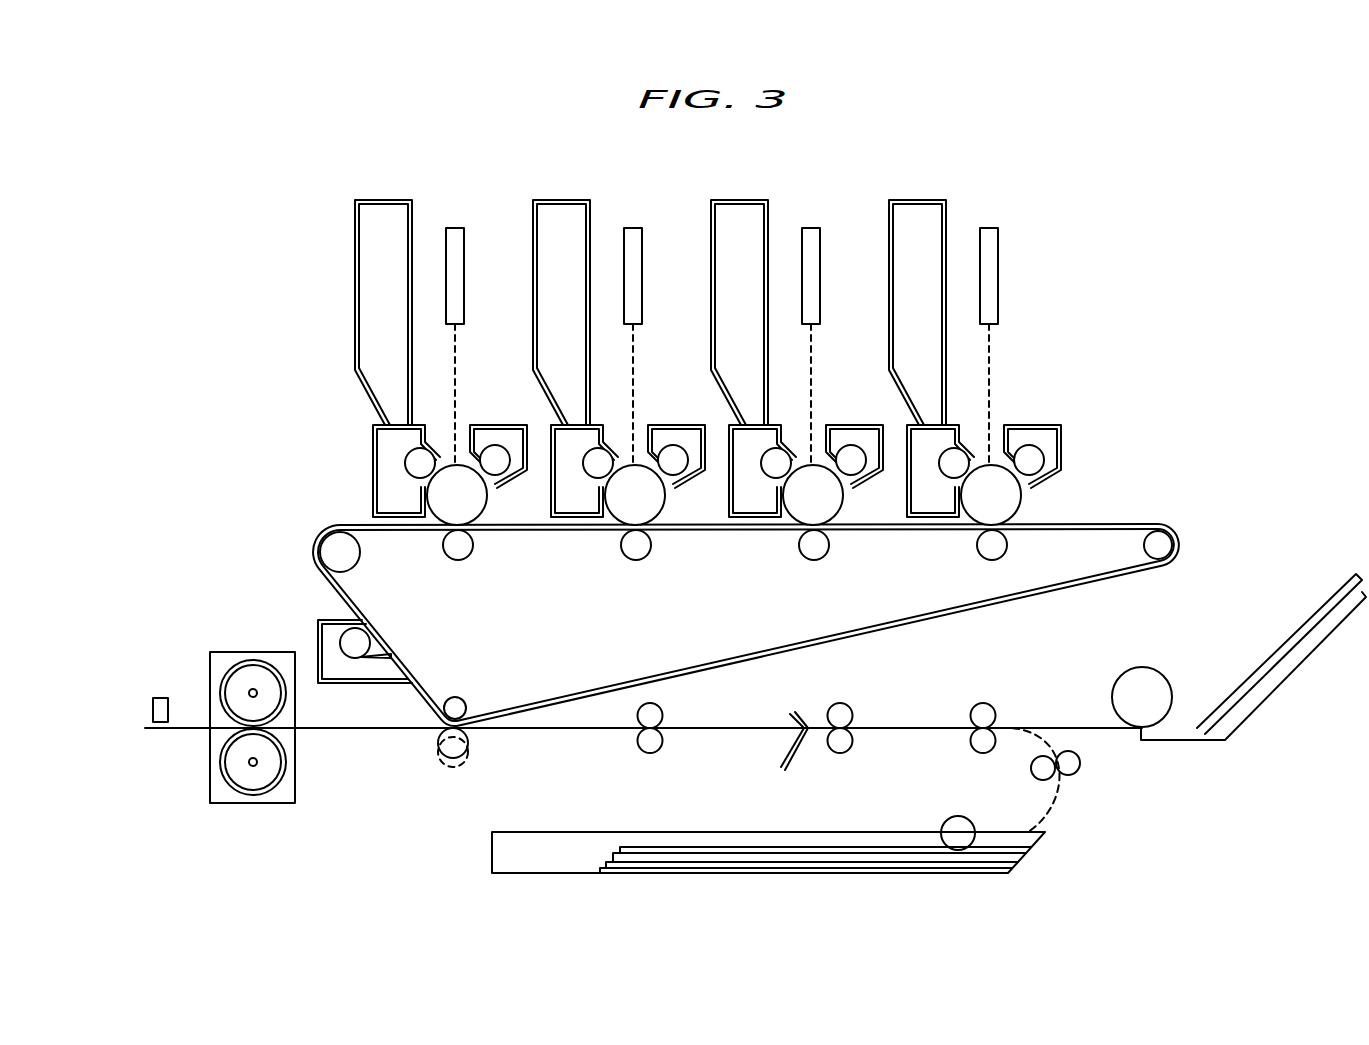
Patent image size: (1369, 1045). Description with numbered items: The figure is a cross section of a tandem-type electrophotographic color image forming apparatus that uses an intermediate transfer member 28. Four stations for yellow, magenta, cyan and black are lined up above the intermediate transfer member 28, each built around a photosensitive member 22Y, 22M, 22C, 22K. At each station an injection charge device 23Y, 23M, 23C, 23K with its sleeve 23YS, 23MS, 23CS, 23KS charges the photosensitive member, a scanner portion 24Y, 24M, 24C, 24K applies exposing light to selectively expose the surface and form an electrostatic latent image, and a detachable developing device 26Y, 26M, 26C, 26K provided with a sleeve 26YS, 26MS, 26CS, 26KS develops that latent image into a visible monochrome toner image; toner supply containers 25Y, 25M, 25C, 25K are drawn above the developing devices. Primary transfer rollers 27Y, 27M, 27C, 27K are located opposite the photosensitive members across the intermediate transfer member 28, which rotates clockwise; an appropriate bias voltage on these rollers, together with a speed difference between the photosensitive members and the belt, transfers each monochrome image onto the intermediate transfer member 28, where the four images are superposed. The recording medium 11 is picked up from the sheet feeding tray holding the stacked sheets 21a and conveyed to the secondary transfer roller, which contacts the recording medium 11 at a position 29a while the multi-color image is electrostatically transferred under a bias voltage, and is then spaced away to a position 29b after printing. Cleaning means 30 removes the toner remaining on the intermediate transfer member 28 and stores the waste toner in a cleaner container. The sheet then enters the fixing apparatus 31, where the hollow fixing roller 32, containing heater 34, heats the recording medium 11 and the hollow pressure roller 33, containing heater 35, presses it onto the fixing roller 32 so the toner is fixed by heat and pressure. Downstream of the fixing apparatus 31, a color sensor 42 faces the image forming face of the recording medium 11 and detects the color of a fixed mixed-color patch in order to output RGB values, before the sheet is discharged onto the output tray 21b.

The recording medium 11 is at (684, 832).
The recording sheets 21a is at (849, 847).
The sheet discharge tray 21b is at (1283, 640).
The photosensitive member 22Y is at (463, 468).
The photosensitive member 22M is at (644, 437).
The photosensitive member 22C is at (821, 437).
The photosensitive member 22K is at (999, 437).
The injection charge device 23Y is at (513, 478).
The injection charge device 23M is at (684, 474).
The injection charge device 23C is at (861, 474).
The injection charge device 23K is at (1040, 474).
The sleeve 23YS is at (494, 466).
The sleeve 23MS is at (687, 510).
The sleeve 23CS is at (863, 510).
The sleeve 23KS is at (1041, 510).
The scanner portion 24Y is at (455, 228).
The scanner portion 24M is at (636, 321).
The scanner portion 24C is at (813, 321).
The scanner portion 24K is at (991, 321).
The toner hopper (yellow) 25Y is at (380, 204).
The toner hopper (magenta) 25M is at (561, 312).
The toner hopper (cyan) 25C is at (739, 312).
The toner hopper (black) 25K is at (917, 312).
The developing device 26Y is at (392, 497).
The developing device 26M is at (584, 498).
The developing device 26C is at (762, 498).
The developing device 26K is at (940, 498).
The sleeve 26YS is at (420, 468).
The sleeve 26MS is at (597, 521).
The sleeve 26CS is at (773, 521).
The sleeve 26KS is at (951, 521).
The primary transfer roller 27Y is at (458, 560).
The primary transfer roller 27M is at (644, 571).
The primary transfer roller 27C is at (821, 571).
The primary transfer roller 27K is at (989, 589).
The intermediate transfer member 28 is at (595, 684).
The position 29a is at (470, 737).
The position 29b is at (440, 761).
The cleaning means 30 is at (330, 627).
The fixing apparatus 31 is at (270, 724).
The fixing roller 32 is at (243, 657).
The pressure roller 33 is at (240, 794).
The heater 34 is at (251, 690).
The heater 35 is at (251, 765).
The color sensor 42 is at (158, 697).